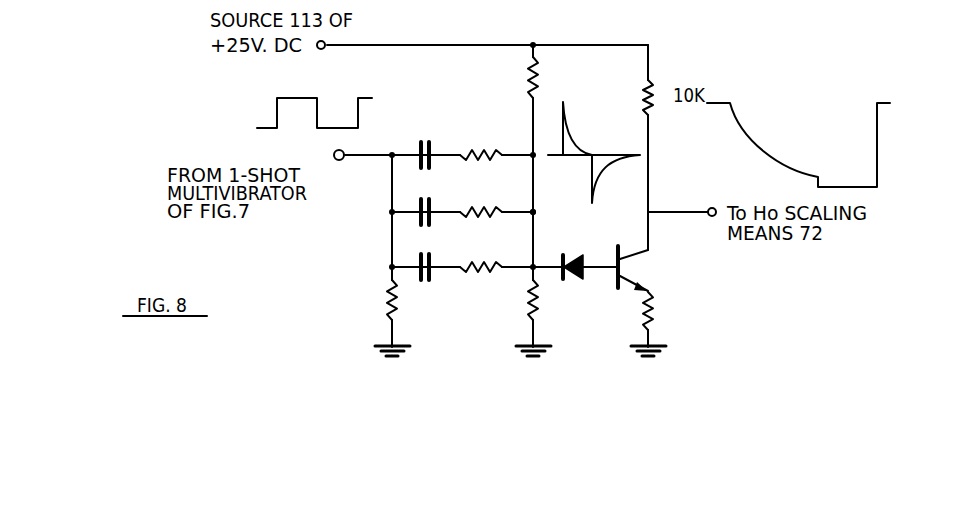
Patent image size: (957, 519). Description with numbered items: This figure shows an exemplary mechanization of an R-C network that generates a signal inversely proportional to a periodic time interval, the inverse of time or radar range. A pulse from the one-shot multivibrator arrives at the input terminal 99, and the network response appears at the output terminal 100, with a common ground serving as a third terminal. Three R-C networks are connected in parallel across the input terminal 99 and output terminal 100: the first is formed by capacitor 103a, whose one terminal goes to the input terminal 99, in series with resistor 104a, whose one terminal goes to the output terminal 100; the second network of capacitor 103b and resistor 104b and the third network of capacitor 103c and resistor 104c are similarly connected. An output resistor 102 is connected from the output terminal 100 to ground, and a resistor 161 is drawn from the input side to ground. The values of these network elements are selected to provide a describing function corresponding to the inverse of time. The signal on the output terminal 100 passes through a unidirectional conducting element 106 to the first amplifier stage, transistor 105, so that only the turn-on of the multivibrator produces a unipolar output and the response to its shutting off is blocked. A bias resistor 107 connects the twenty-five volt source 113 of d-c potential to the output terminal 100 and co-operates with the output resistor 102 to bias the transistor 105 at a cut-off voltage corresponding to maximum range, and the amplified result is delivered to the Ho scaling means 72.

The Ho scaling means 72 is at (682, 212).
The input terminal 99 is at (335, 151).
The output terminal 100 is at (536, 208).
The output resistor 102 is at (539, 297).
The capacitor 103a is at (423, 128).
The capacitor 103b is at (418, 221).
The capacitor 103c is at (418, 276).
The resistor 104a is at (470, 150).
The resistor 104b is at (470, 208).
The resistor 104c is at (470, 272).
The transistor 105 is at (626, 263).
The unidirectional conducting element 106 is at (579, 264).
The bias resistor 107 is at (527, 82).
The source of d-c potential 113 is at (321, 45).
The resistor 161 is at (384, 295).